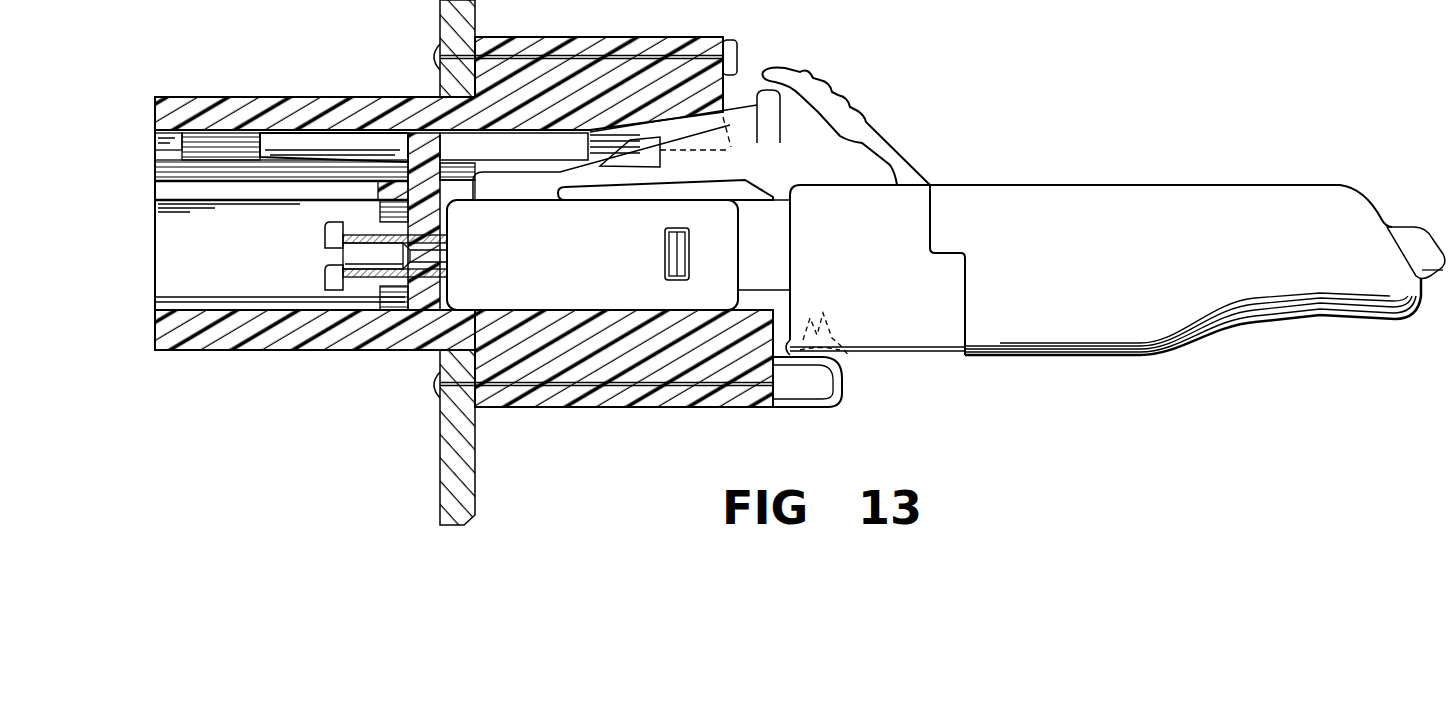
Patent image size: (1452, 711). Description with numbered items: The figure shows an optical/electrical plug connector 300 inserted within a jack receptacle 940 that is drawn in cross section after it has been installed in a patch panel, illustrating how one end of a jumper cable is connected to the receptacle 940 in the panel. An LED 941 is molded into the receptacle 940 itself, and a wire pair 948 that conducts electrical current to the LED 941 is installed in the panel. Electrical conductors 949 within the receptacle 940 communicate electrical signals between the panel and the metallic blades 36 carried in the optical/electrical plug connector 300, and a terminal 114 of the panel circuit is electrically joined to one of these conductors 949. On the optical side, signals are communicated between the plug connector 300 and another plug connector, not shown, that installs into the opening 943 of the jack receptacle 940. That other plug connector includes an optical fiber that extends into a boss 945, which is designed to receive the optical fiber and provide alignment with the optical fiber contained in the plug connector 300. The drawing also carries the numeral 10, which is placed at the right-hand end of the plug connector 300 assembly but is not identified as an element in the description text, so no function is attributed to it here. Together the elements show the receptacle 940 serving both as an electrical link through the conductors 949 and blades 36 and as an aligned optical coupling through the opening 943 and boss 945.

The receptacle 940 is at (280, 80).
The opening 943 is at (172, 258).
The boss 945 is at (325, 283).
The terminal 114 is at (437, 385).
The wire pair 948 is at (580, 57).
The LED 941 is at (733, 52).
The electrical conductors 949 is at (613, 386).
The optical/electrical plug connector 300 is at (940, 165).
The plug / boot 10 is at (1405, 224).
The metallic blades 36 is at (850, 358).